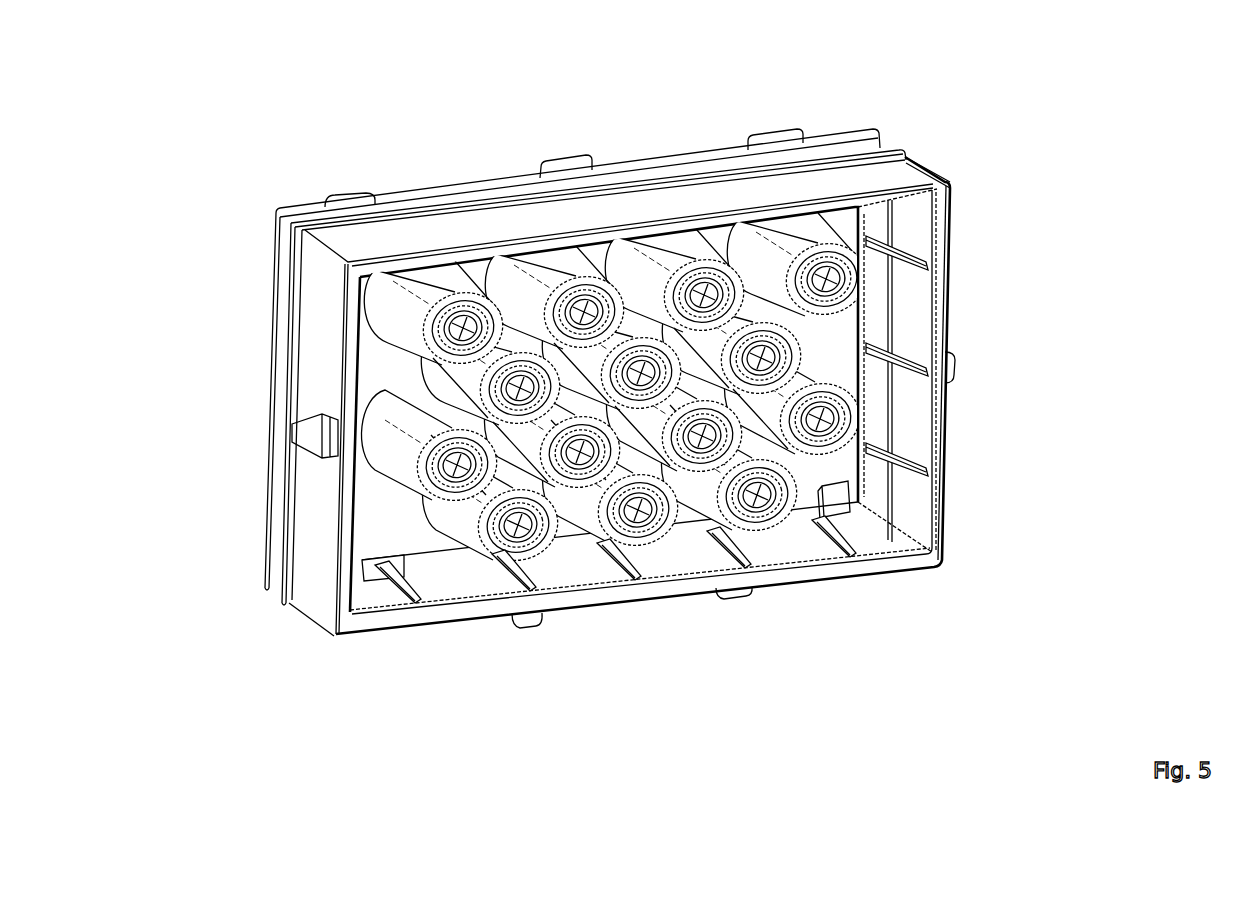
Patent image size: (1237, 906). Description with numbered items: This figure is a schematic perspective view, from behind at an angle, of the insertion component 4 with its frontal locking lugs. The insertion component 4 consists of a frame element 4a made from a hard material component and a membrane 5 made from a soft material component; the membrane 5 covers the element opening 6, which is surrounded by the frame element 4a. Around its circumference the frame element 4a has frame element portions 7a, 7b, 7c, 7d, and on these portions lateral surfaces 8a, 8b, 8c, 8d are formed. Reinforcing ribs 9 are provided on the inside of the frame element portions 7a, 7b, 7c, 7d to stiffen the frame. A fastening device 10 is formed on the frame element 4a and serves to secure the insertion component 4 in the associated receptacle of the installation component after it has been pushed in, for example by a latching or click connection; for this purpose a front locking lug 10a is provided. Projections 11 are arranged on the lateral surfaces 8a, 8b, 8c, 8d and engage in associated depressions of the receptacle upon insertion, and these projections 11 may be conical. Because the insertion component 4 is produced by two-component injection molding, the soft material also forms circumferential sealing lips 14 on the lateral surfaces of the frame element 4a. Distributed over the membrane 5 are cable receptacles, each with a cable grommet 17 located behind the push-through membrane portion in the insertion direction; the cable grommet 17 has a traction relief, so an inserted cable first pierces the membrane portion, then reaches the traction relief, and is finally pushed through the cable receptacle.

The insertion component 4 is at (945, 520).
The frame element 4a is at (930, 322).
The membrane 5 is at (840, 480).
The element opening 6 is at (472, 590).
The frame element portion 7a is at (426, 235).
The frame element portion 7b is at (930, 230).
The frame element portion 7c is at (668, 578).
The frame element portion 7d is at (330, 345).
The lateral surface 8a is at (670, 200).
The lateral surface 8b is at (955, 436).
The lateral surface 8c is at (607, 618).
The lateral surface 8d is at (315, 512).
The reinforcing ribs 9 is at (893, 462).
The fastening device 10 is at (795, 138).
The front locking lug 10a is at (578, 172).
The projections 11 is at (320, 441).
The circumferential sealing lips 14 is at (298, 605).
The cable grommet 17 is at (828, 240).